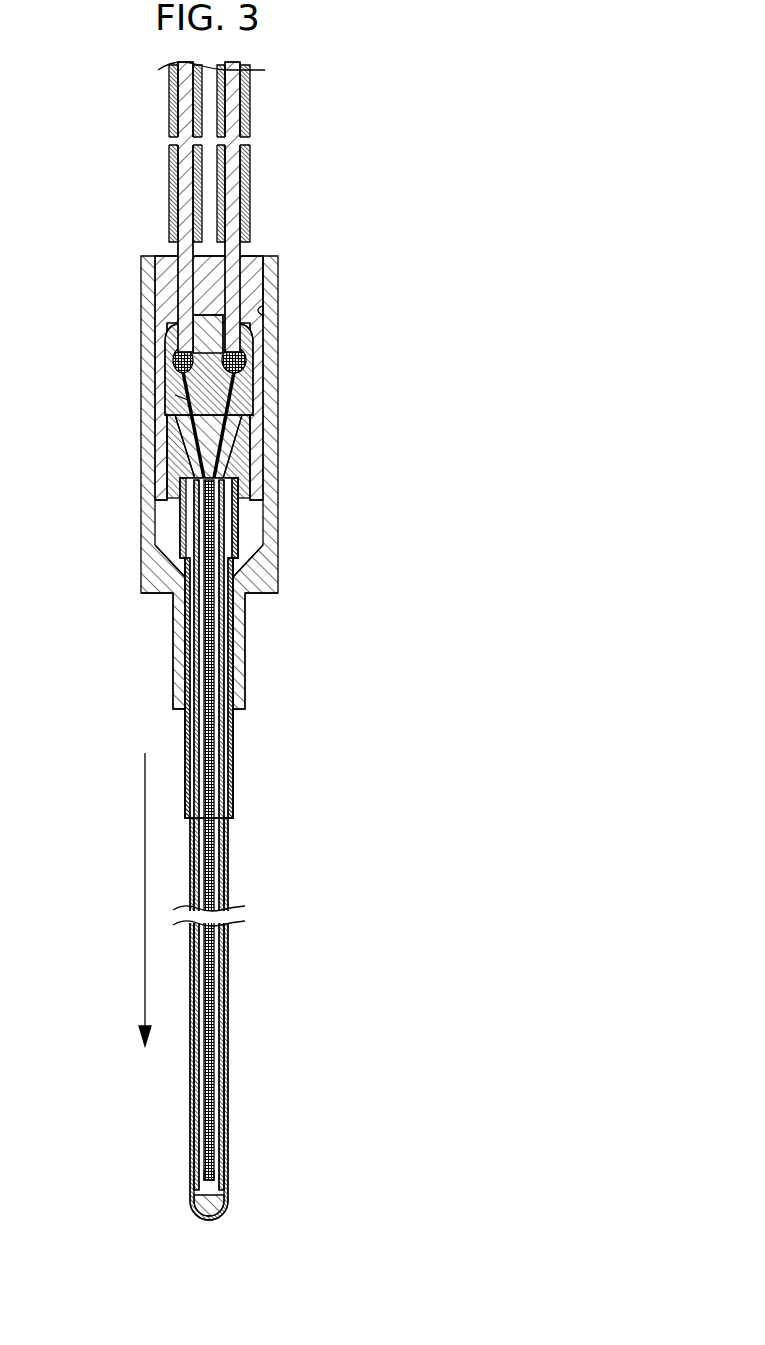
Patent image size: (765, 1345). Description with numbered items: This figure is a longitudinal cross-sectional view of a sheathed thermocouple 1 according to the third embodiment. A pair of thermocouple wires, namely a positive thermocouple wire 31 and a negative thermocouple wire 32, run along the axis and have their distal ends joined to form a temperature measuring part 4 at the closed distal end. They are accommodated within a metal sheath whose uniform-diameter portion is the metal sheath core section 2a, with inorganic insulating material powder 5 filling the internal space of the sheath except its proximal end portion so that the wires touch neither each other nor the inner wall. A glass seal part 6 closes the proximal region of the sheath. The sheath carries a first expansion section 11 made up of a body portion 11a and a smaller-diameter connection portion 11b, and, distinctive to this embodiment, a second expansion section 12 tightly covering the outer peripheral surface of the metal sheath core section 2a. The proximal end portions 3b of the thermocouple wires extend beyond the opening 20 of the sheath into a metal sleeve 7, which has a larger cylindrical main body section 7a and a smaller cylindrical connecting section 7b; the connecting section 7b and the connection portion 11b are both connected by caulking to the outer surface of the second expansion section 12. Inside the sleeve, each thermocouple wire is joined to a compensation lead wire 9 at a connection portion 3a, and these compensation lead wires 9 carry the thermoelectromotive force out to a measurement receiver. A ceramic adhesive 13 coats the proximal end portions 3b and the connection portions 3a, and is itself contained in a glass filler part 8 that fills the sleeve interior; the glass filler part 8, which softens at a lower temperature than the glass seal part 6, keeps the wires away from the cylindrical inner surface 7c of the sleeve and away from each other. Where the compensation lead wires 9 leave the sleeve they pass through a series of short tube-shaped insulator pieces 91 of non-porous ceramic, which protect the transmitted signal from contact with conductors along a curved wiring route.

The sheathed thermocouple 1 is at (448, 512).
The metal sheath core section 2a is at (228, 1060).
The connection portion 3a is at (253, 356).
The proximal end portion of thermocouple wire 3b is at (176, 384).
The temperature measuring part 4 is at (209, 1190).
The inorganic insulating material powder 5 is at (214, 1120).
The glass seal part 6 is at (240, 442).
The metal sleeve 7 is at (280, 403).
The cylindrical main body section 7a is at (280, 549).
The cylindrical connecting section 7b is at (246, 657).
The cylindrical inner surface 7c is at (263, 312).
The glass filler part 8 is at (248, 302).
The compensation lead wire 9 is at (235, 252).
The insulator piece 91 is at (165, 112).
The first expansion section 11 is at (240, 494).
The body portion 11a is at (255, 455).
The connection portion 11b is at (240, 520).
The second expansion section 12 is at (234, 754).
The ceramic adhesive 13 is at (262, 373).
The opening 20 is at (172, 398).
The positive thermocouple wire 31 is at (215, 838).
The negative thermocouple wire 32 is at (205, 873).